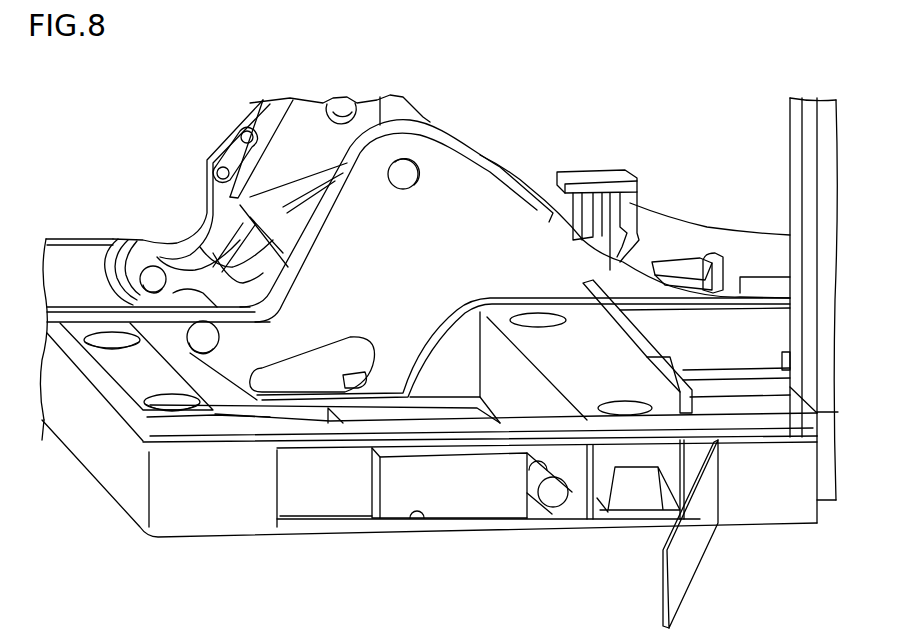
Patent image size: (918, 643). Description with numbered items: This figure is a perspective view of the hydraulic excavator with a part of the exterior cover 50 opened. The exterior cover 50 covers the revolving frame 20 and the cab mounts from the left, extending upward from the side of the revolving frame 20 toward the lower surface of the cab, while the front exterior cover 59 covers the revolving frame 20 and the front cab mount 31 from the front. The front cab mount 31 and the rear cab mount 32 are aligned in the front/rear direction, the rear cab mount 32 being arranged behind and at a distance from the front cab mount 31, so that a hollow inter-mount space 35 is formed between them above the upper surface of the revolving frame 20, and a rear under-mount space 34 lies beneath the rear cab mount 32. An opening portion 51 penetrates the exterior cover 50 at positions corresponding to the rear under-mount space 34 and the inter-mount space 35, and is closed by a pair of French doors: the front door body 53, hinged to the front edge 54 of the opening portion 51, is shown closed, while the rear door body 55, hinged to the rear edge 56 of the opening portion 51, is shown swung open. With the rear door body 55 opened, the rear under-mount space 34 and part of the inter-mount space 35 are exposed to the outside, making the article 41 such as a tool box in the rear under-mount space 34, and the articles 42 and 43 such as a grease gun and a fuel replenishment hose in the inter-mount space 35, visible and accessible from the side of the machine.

The revolving frame 20 is at (306, 413).
The front cab mount 31 is at (134, 365).
The rear cab mount 32 is at (557, 365).
The rear under-mount space 34 is at (600, 497).
The inter-mount space 35 is at (533, 507).
The article 41 is at (635, 493).
The article 42 is at (552, 492).
The article 43 is at (475, 492).
The exterior cover 50 is at (196, 508).
The opening portion 51 is at (416, 508).
The front door body 53 is at (331, 510).
The front edge 54 is at (277, 495).
The rear door body 55 is at (683, 560).
The rear edge 56 is at (722, 483).
The front exterior cover 59 is at (100, 440).